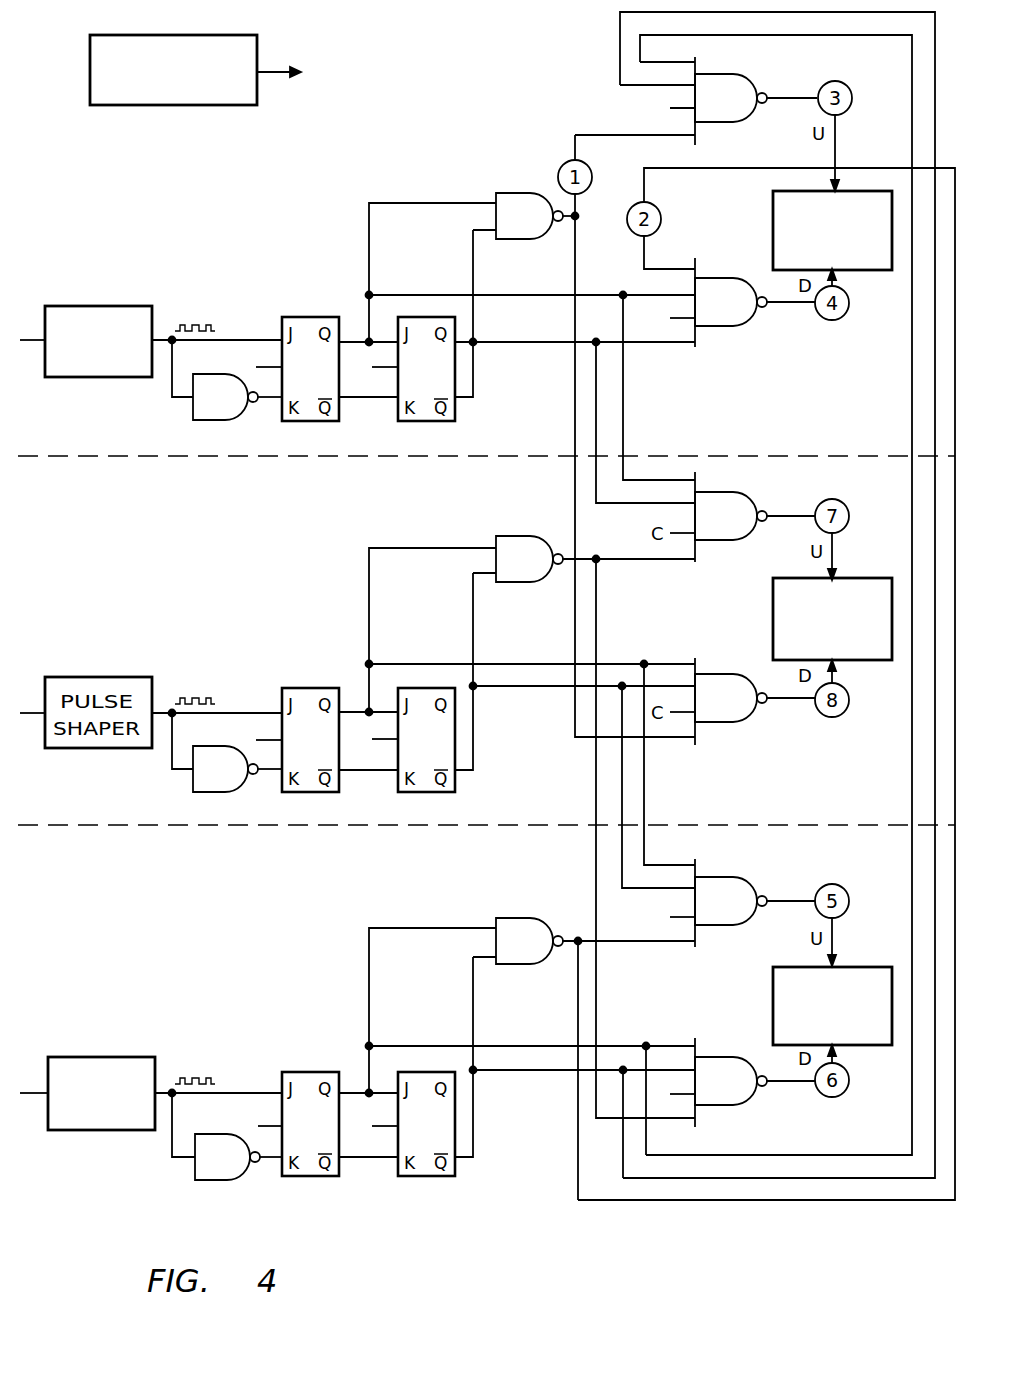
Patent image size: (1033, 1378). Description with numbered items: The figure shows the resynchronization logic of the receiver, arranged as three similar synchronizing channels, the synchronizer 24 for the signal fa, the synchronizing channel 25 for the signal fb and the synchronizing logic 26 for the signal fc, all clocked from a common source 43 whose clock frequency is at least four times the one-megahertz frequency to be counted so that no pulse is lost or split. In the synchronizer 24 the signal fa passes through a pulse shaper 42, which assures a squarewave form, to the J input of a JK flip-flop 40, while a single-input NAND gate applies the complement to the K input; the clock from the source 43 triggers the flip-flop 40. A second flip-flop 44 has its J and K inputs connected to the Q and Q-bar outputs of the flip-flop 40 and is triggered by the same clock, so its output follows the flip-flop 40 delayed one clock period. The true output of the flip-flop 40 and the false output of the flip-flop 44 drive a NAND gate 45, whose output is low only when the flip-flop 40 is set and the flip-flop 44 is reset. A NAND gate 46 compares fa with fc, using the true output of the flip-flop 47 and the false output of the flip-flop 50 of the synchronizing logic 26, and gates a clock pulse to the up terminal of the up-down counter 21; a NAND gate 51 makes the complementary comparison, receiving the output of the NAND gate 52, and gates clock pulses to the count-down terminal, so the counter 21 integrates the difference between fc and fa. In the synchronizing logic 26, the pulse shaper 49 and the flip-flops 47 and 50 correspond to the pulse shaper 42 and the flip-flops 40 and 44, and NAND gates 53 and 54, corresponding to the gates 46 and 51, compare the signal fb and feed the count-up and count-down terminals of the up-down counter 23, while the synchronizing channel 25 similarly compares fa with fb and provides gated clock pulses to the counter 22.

The up-down counter 21 is at (890, 270).
The up-down counter 22 is at (890, 660).
The up-down counter 23 is at (890, 1045).
The synchronizer 24 is at (308, 267).
The synchronizing channel 25 is at (308, 643).
The synchronizing logic 26 is at (308, 1020).
The JK flip-flop 40 is at (339, 408).
The pulse shaper 42 is at (105, 377).
The clock source 43 is at (222, 105).
The second flip-flop 44 is at (456, 410).
The NAND gate 45 is at (540, 239).
The NAND gate 46 is at (743, 74).
The flip-flop 47 is at (339, 1162).
The pulse shaper 49 is at (115, 1057).
The flip-flop 50 is at (456, 1164).
The NAND gate 51 is at (733, 326).
The NAND gate 52 is at (540, 918).
The NAND gate 53 is at (745, 877).
The NAND gate 54 is at (750, 1105).